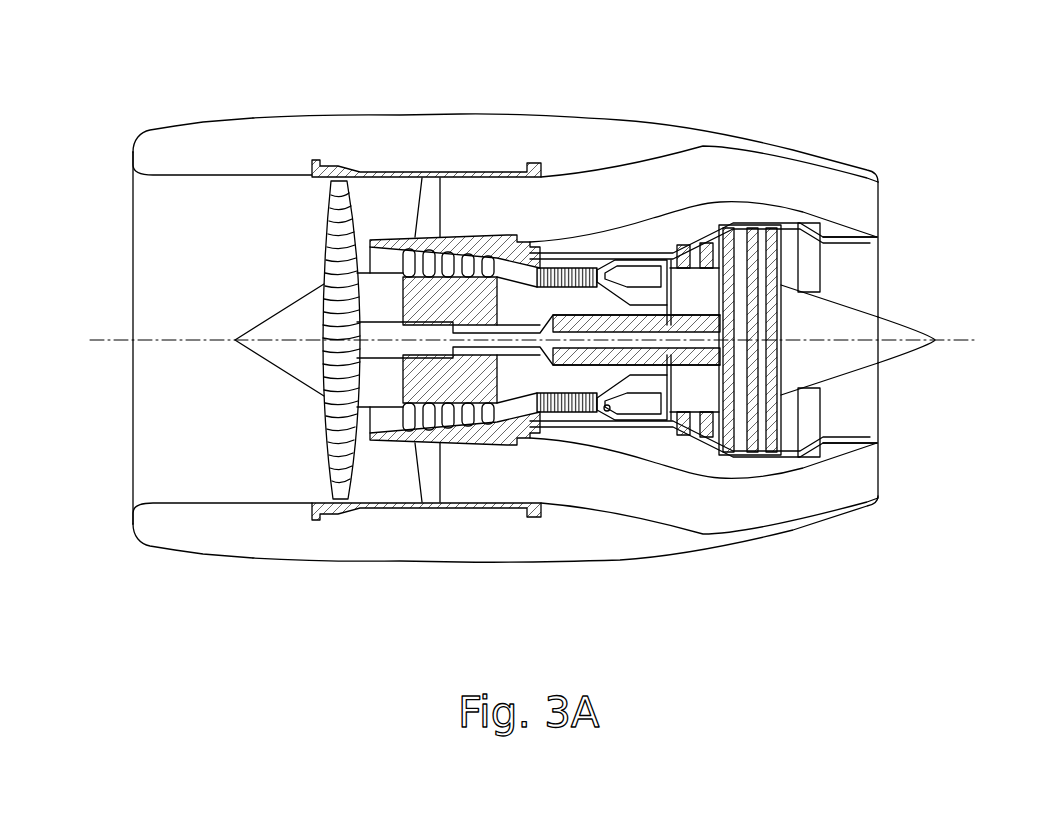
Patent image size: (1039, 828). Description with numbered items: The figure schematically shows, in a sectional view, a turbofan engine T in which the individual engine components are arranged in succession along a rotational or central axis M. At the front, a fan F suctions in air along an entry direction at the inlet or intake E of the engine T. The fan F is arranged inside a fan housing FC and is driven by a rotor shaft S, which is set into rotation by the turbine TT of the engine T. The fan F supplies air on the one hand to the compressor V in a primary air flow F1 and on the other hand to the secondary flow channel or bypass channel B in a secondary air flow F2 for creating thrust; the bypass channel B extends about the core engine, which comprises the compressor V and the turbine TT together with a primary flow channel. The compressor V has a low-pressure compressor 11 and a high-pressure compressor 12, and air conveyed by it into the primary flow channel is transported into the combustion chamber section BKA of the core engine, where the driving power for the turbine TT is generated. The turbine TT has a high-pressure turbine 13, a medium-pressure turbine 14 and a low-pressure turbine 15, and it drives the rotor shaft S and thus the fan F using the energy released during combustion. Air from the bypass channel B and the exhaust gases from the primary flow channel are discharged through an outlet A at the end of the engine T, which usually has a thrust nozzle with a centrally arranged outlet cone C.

The engine T is at (917, 83).
The inlet E is at (147, 430).
The bypass channel B is at (655, 168).
The fan housing FC is at (344, 172).
The compressor V is at (461, 482).
The fan F is at (327, 452).
The primary air flow F1 is at (380, 258).
The secondary air flow F2 is at (381, 203).
The rotor shaft S is at (557, 363).
The low-pressure compressor 11 is at (433, 257).
The high-pressure compressor 12 is at (549, 258).
The turbine TT is at (723, 197).
The combustion chamber section BKA is at (640, 407).
The high-pressure turbine 13 is at (687, 430).
The medium-pressure turbine 14 is at (720, 440).
The low-pressure turbine 15 is at (800, 443).
The outlet A is at (868, 278).
The outlet cone C is at (868, 353).
The central axis M is at (953, 341).